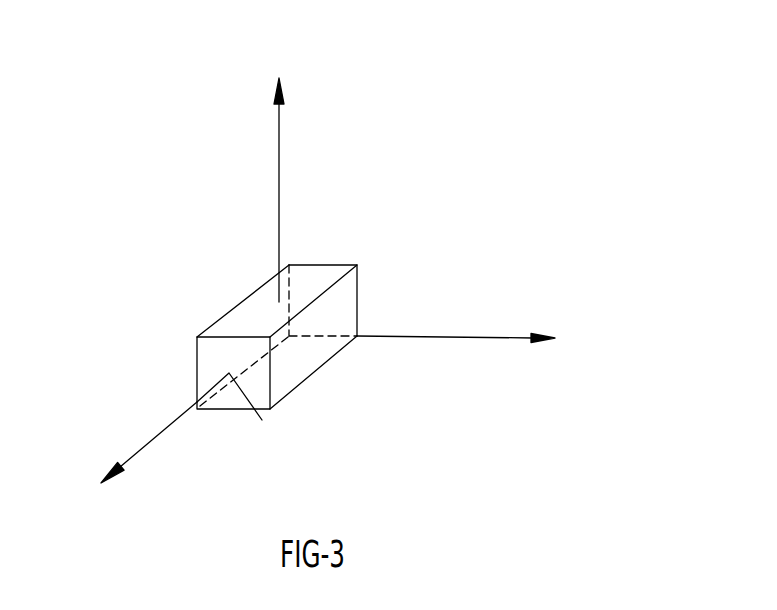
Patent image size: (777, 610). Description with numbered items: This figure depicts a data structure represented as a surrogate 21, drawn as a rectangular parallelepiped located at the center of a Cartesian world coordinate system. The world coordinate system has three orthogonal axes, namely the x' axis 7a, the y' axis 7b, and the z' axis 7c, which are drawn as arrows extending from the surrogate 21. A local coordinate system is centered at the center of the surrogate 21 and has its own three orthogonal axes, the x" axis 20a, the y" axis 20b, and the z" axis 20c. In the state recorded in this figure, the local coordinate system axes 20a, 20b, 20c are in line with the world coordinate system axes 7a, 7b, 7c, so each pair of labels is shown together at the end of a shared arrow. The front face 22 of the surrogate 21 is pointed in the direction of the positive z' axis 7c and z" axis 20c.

The x' axis 7a is at (506, 323).
The y' axis 7b is at (316, 151).
The z' axis 7c is at (110, 481).
The x" axis 20a is at (506, 323).
The y" axis 20b is at (316, 151).
The z" axis 20c is at (113, 481).
The surrogate 21 is at (332, 265).
The front face 22 is at (262, 420).